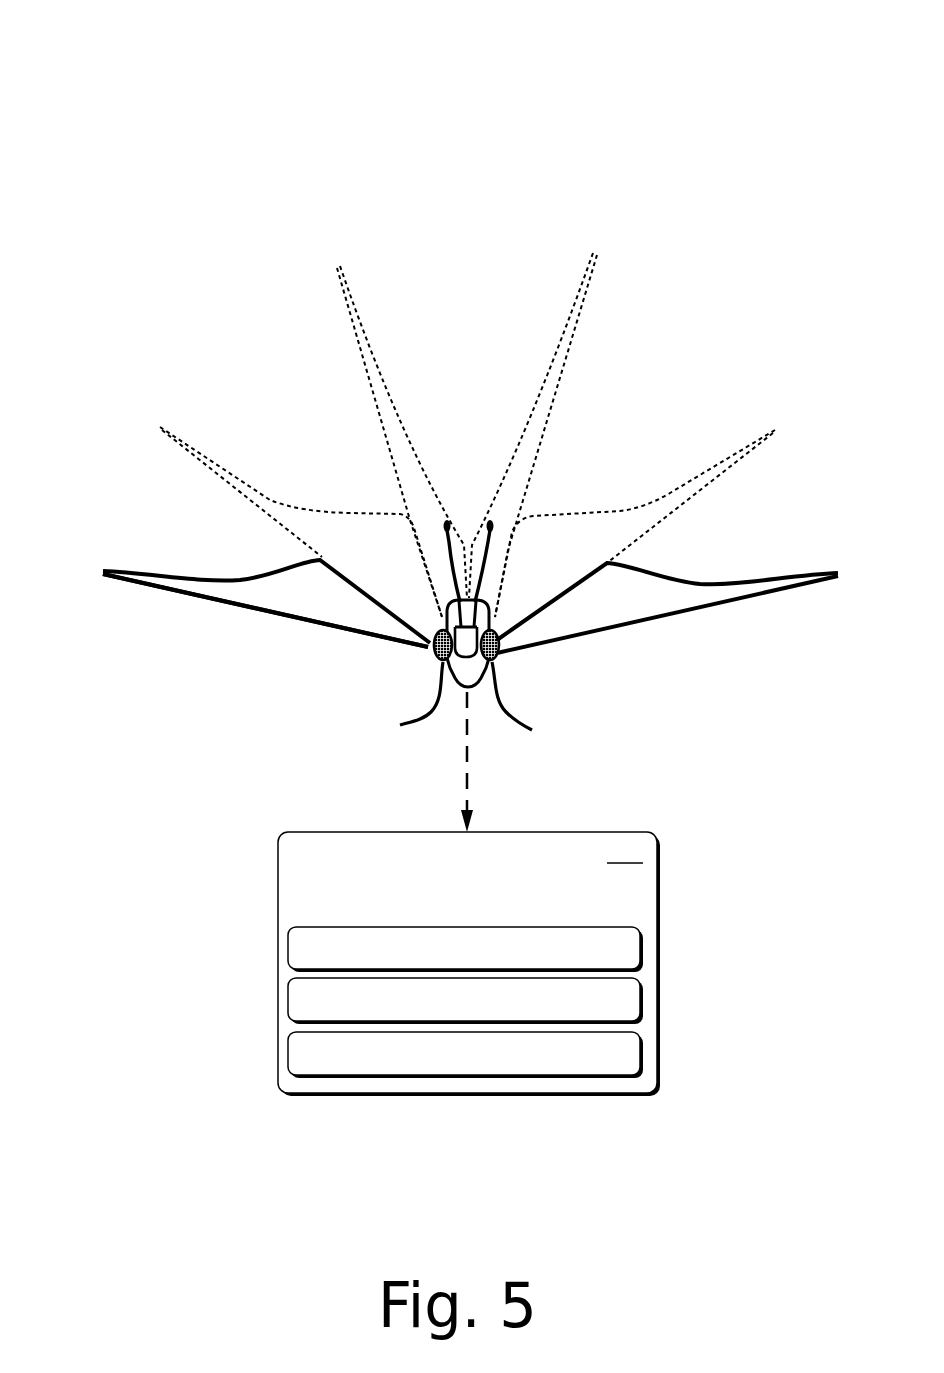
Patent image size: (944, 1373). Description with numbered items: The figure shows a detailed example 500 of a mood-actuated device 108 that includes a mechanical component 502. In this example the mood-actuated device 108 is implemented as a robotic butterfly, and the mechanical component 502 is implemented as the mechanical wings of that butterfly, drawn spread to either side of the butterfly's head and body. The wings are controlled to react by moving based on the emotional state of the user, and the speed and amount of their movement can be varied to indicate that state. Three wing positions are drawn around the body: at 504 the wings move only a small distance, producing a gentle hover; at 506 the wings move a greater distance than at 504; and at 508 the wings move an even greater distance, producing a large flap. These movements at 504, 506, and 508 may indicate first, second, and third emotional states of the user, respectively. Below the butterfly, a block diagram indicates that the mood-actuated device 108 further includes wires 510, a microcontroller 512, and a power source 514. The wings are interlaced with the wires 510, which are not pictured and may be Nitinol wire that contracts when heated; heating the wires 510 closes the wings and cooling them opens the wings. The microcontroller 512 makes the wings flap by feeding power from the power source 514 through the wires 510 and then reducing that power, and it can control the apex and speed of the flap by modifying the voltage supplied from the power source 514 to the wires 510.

The detailed example 500 is at (137, 45).
The mood-actuated device 108 is at (237, 265).
The mechanical component 502 is at (312, 620).
The gentle hover wing movement 504 is at (104, 569).
The intermediate wing movement 506 is at (161, 425).
The large flap wing movement 508 is at (339, 265).
The wires 510 is at (627, 956).
The microcontroller 512 is at (627, 1010).
The power source 514 is at (627, 1063).